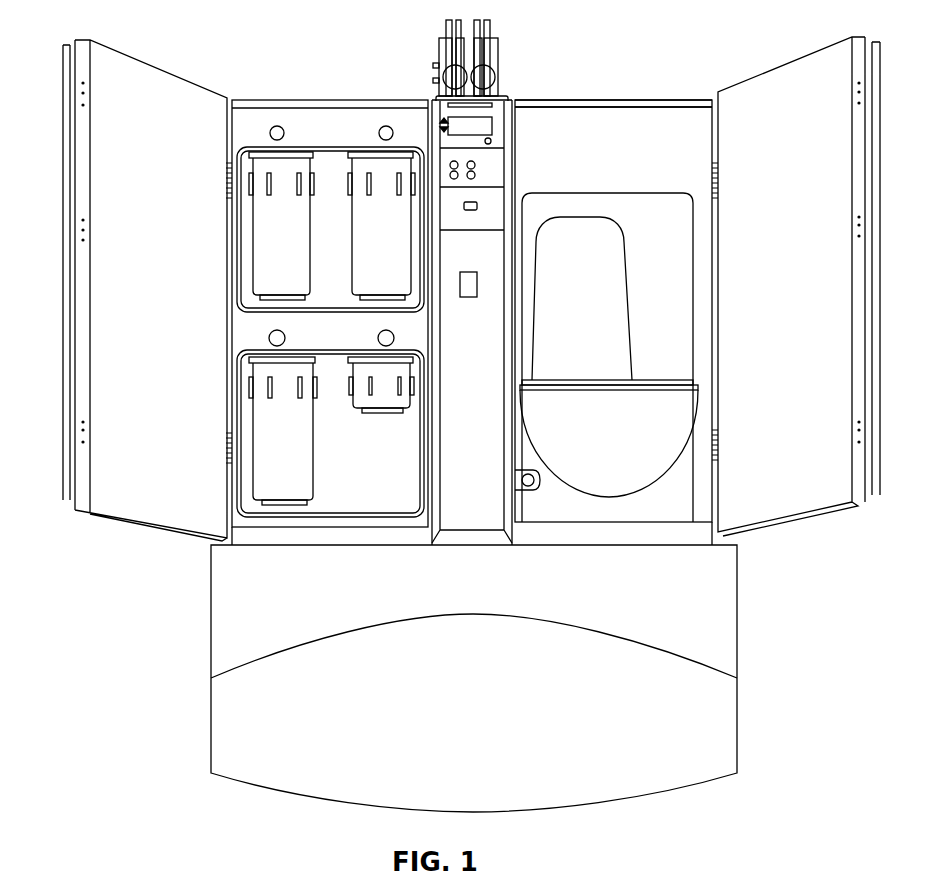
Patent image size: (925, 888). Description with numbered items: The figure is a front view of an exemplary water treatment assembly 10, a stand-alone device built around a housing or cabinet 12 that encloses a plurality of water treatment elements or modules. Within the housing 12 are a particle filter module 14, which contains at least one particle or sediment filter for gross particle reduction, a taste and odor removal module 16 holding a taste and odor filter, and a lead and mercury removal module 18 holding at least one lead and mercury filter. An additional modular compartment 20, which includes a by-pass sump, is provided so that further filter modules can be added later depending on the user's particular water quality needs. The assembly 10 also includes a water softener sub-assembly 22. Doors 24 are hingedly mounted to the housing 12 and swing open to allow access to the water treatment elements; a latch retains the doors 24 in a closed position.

The water treatment assembly 10 is at (766, 547).
The housing 12 is at (723, 605).
The particle filter module 14 is at (380, 167).
The taste and odor removal module 16 is at (283, 167).
The lead and mercury removal module 18 is at (273, 491).
The modular compartment 20 is at (380, 400).
The water softener sub-assembly 22 is at (617, 98).
The doors 24 is at (107, 470).